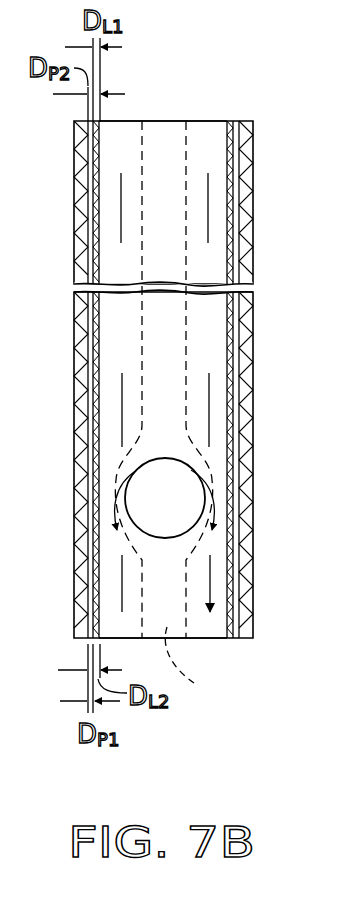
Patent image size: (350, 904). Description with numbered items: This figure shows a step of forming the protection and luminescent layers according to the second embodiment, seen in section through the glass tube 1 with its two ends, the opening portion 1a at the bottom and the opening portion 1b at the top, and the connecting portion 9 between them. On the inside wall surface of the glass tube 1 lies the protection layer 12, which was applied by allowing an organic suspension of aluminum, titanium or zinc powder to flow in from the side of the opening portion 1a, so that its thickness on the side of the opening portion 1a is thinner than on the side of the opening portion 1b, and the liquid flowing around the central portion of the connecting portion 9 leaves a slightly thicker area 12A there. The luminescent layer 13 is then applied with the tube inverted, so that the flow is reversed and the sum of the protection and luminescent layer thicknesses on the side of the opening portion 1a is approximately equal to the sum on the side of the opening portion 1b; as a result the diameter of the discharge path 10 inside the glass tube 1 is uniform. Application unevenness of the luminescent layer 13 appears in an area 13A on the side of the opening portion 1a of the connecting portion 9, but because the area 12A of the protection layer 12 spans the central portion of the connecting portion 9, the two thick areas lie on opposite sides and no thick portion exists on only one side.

The glass tube 1 is at (80, 364).
The opening portion 1a is at (213, 628).
The opening portion 1b is at (198, 130).
The connecting portion 9 is at (200, 497).
The discharge path 10 is at (137, 492).
The protection layer 12 is at (240, 130).
The area 12A is at (150, 133).
The luminescent layer 13 is at (224, 126).
The area 13A is at (206, 669).